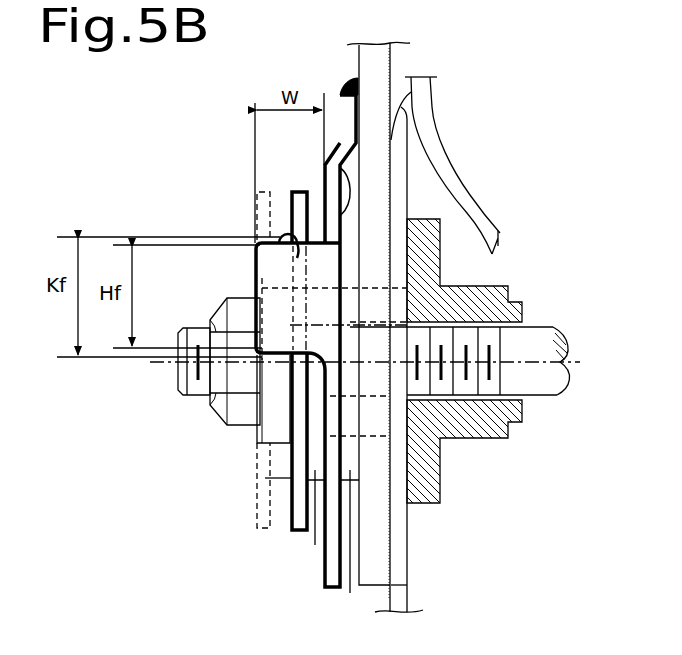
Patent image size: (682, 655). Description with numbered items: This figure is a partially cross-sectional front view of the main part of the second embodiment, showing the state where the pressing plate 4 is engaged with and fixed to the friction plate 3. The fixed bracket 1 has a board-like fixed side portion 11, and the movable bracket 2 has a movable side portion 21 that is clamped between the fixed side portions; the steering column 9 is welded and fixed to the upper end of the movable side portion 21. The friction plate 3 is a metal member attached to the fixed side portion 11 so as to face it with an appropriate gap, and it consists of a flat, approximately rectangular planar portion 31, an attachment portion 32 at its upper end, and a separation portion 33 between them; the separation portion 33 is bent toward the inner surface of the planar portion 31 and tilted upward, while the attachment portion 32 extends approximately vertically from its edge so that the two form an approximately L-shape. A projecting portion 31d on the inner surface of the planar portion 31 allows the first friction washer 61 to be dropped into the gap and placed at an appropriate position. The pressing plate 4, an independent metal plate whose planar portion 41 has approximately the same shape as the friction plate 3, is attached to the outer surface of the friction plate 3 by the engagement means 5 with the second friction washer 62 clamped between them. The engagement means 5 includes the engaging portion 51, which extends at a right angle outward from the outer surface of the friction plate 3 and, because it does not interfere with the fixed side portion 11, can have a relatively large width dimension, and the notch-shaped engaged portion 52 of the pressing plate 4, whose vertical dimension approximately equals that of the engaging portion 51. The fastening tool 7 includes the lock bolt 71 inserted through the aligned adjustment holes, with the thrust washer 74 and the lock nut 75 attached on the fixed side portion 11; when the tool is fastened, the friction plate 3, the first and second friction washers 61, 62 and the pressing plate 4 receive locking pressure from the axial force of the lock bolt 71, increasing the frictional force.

The fixed bracket 1 is at (354, 58).
The fixed side portion 11 is at (390, 56).
The movable bracket 2 is at (410, 550).
The movable side portion 21 is at (396, 582).
The friction plate 3 is at (277, 355).
The planar portion 31 is at (330, 567).
The projecting portion 31d is at (327, 174).
The attachment portion 32 is at (351, 107).
The separation portion 33 is at (331, 161).
The pressing plate 4 is at (292, 508).
The planar portion 41 is at (265, 478).
The engagement means 5 is at (197, 257).
The engaging portion 51 is at (270, 267).
The engaged portion 52 is at (279, 240).
The first friction washer 61 is at (380, 612).
The second friction washer 62 is at (315, 474).
The fastening tool 7 is at (542, 326).
The lock bolt 71 is at (196, 328).
The thrust washer 74 is at (276, 445).
The lock nut 75 is at (214, 412).
The steering column 9 is at (456, 186).